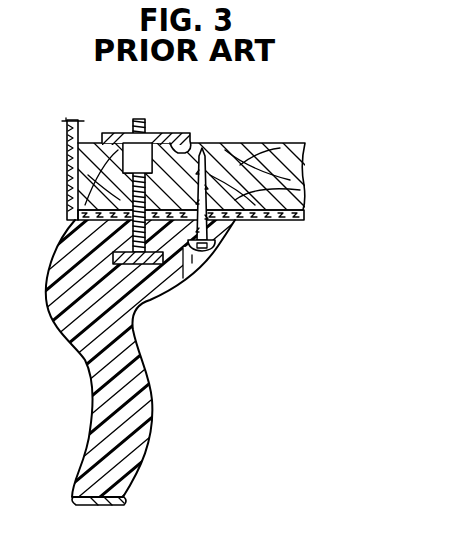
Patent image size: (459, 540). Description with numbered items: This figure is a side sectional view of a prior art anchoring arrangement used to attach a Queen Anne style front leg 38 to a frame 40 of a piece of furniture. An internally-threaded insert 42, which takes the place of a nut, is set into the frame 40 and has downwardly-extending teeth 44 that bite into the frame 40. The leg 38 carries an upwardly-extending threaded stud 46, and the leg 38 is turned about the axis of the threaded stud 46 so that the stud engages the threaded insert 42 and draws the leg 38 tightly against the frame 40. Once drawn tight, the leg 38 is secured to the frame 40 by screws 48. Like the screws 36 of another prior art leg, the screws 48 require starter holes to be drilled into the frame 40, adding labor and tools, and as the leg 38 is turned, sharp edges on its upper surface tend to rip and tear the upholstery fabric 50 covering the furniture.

The screws 36 is at (19, 535).
The front leg 38 is at (140, 374).
The frame 40 is at (290, 142).
The internally-threaded insert 42 is at (149, 120).
The downwardly-extending teeth 44 is at (97, 137).
The threaded stud 46 is at (72, 243).
The screws 48 is at (220, 231).
The upholstery fabric 50 is at (280, 221).